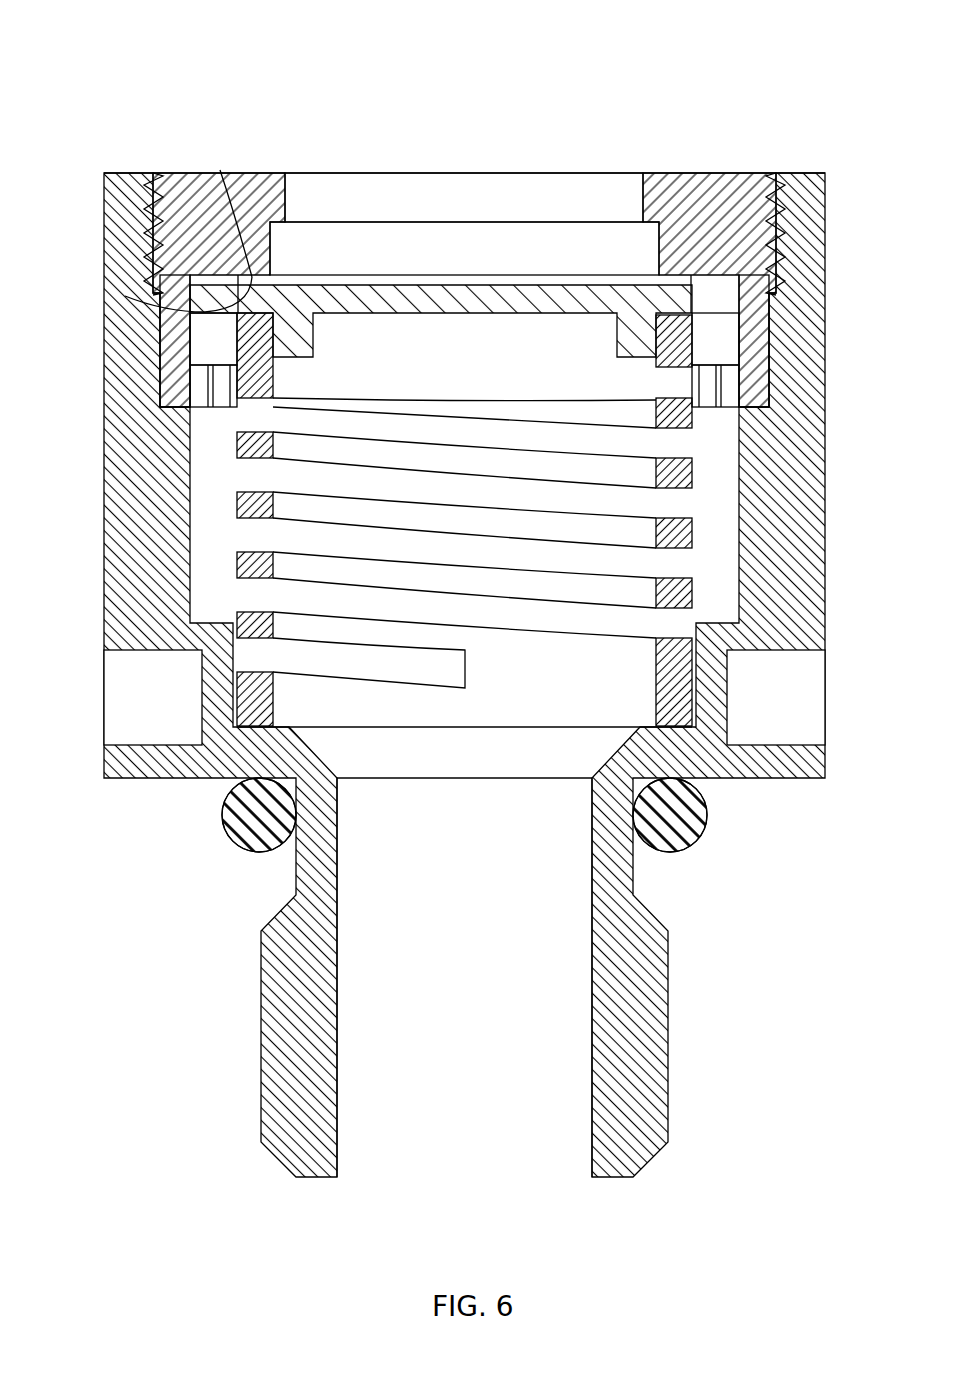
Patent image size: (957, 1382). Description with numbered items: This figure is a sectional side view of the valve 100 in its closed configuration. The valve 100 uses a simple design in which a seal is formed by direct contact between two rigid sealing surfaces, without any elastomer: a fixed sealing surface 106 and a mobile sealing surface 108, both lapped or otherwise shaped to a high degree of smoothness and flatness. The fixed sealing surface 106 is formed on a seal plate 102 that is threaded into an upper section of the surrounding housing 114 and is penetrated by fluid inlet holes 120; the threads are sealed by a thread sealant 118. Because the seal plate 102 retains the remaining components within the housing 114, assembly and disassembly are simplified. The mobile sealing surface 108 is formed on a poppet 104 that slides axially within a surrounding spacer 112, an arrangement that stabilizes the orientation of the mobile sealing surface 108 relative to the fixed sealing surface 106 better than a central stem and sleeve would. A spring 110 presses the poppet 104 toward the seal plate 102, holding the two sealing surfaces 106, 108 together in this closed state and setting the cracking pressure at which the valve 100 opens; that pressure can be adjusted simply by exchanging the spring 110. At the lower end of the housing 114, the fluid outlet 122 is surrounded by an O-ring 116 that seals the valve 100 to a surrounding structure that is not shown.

The valve 100 is at (463, 615).
The seal plate 102 is at (662, 182).
The poppet 104 is at (388, 306).
The fixed sealing surface 106 is at (220, 170).
The mobile sealing surface 108 is at (125, 296).
The spring 110 is at (692, 538).
The spacer 112 is at (755, 338).
The housing 114 is at (668, 1052).
The O-ring 116 is at (698, 852).
The thread sealant 118 is at (780, 197).
The fluid inlet holes 120 is at (380, 180).
The fluid outlet 122 is at (476, 1162).